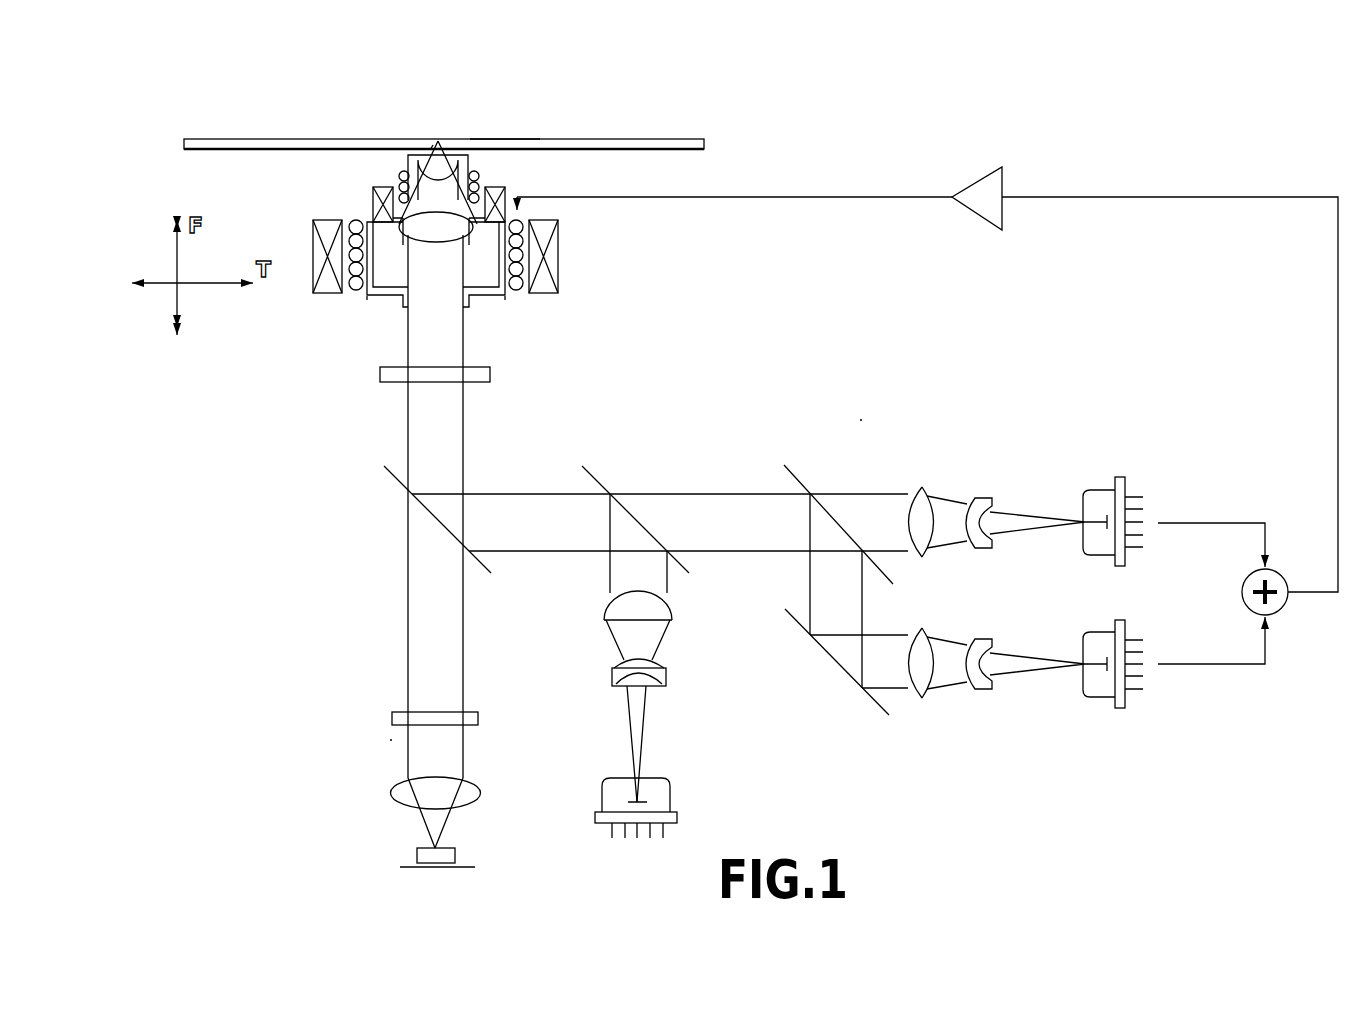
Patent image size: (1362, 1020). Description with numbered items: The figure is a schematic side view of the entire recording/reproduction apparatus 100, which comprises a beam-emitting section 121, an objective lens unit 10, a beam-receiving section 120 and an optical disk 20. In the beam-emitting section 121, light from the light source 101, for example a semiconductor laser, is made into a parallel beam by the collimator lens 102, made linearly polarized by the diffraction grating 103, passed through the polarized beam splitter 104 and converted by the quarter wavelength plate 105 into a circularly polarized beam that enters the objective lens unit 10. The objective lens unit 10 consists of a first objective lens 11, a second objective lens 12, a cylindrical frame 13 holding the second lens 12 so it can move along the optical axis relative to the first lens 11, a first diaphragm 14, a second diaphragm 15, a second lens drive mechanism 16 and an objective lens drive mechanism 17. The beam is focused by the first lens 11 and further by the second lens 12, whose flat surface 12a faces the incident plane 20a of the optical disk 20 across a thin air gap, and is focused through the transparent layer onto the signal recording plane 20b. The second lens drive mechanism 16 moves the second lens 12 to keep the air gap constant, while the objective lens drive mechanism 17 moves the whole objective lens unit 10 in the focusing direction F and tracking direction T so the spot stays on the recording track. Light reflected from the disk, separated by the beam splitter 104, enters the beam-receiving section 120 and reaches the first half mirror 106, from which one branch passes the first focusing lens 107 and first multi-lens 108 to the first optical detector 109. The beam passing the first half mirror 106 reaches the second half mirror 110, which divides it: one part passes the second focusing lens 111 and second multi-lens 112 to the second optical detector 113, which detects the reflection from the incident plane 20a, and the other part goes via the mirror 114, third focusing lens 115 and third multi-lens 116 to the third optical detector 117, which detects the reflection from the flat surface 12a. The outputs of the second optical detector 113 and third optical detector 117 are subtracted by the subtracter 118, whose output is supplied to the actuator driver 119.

The objective lens unit 10 is at (589, 281).
The first objective lens 11 is at (470, 215).
The second objective lens 12 is at (478, 176).
The flat surface 12a is at (440, 141).
The cylindrical frame 13 is at (403, 167).
The first diaphragm 14 is at (402, 302).
The second diaphragm 15 is at (427, 148).
The second lens drive mechanism 16 is at (398, 183).
The objective lens drive mechanism 17 is at (348, 297).
The optical disk 20 is at (705, 145).
The incident plane 20a is at (563, 152).
The signal recording plane 20b is at (502, 138).
The optical information recording/reproducing apparatus 100 is at (1192, 151).
The light source 101 is at (417, 856).
The collimator lens 102 is at (472, 803).
The diffraction grating 103 is at (478, 718).
The polarized beam splitter 104 is at (482, 577).
The quarter wavelength plate 105 is at (492, 373).
The first half mirror 106 is at (590, 472).
The first focusing lens 107 is at (672, 605).
The first multi-lens 108 is at (666, 677).
The first optical detector 109 is at (670, 790).
The second half mirror 110 is at (797, 472).
The second focusing lens 111 is at (925, 485).
The second multi-lens 112 is at (985, 550).
The second optical detector 113 is at (1093, 490).
The mirror 114 is at (872, 702).
The third focusing lens 115 is at (930, 700).
The third multi-lens 116 is at (987, 640).
The third optical detector 117 is at (1103, 700).
The subtracter 118 is at (1280, 613).
The actuator driver 119 is at (1002, 178).
The beam-receiving section 120 is at (855, 395).
The beam-emitting section 121 is at (343, 753).